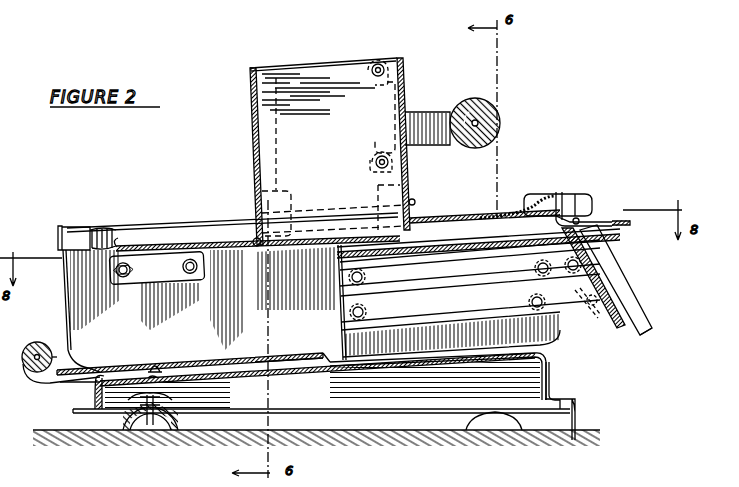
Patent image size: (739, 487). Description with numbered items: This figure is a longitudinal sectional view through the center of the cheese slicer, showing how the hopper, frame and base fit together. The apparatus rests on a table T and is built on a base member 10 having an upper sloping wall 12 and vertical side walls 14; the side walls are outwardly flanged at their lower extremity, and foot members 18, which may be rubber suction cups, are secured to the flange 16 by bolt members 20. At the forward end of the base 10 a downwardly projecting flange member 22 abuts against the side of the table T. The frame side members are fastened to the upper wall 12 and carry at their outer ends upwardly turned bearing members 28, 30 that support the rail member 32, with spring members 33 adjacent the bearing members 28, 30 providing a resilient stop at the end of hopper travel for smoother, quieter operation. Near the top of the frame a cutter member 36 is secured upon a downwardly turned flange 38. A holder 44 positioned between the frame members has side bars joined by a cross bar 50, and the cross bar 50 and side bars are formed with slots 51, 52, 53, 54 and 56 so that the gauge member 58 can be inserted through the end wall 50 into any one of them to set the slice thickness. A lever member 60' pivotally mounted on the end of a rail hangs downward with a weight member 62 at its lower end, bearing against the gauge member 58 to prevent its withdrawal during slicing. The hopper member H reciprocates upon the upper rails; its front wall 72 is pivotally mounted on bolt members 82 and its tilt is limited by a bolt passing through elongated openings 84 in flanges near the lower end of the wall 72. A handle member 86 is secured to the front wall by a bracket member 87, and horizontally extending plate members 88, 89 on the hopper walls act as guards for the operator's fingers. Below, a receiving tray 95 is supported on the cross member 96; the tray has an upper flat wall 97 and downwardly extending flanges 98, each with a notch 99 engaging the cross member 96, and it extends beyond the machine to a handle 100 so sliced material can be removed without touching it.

The hopper member H is at (249, 92).
The base member 10 is at (545, 358).
The upper sloping wall 12 is at (304, 368).
The vertical side walls 14 is at (97, 392).
The flange 16 is at (74, 412).
The foot members 18 is at (138, 428).
The bolt members 20 is at (160, 425).
The downwardly projecting flange member 22 is at (577, 425).
The bearing member 28 is at (538, 198).
The bearing member 30 is at (78, 232).
The rail member 32 is at (180, 229).
The spring members 33 is at (100, 230).
The cutter member 36 is at (150, 245).
The downwardly turned flange 38 is at (112, 280).
The holder 44 is at (573, 316).
The cross bar 50 is at (600, 253).
The slot 51 is at (340, 248).
The slot 52 is at (470, 242).
The slot 53 is at (372, 265).
The slot 54 is at (386, 284).
The slot 56 is at (470, 324).
The gauge member 58 is at (512, 218).
The lever member 60' is at (618, 280).
The weight member 62 is at (644, 324).
The front wall 72 is at (405, 66).
The bolt members 82 is at (381, 63).
The elongated openings 84 is at (390, 162).
The handle member 86 is at (499, 115).
The bracket member 87 is at (448, 130).
The plate member 88 is at (215, 242).
The plate member 89 is at (442, 218).
The receiving tray 95 is at (209, 368).
The cross member 96 is at (160, 370).
The upper flat wall 97 is at (118, 375).
The downwardly extending flanges 98 is at (294, 365).
The notch 99 is at (152, 379).
The handle 100 is at (54, 340).
The table T is at (350, 434).